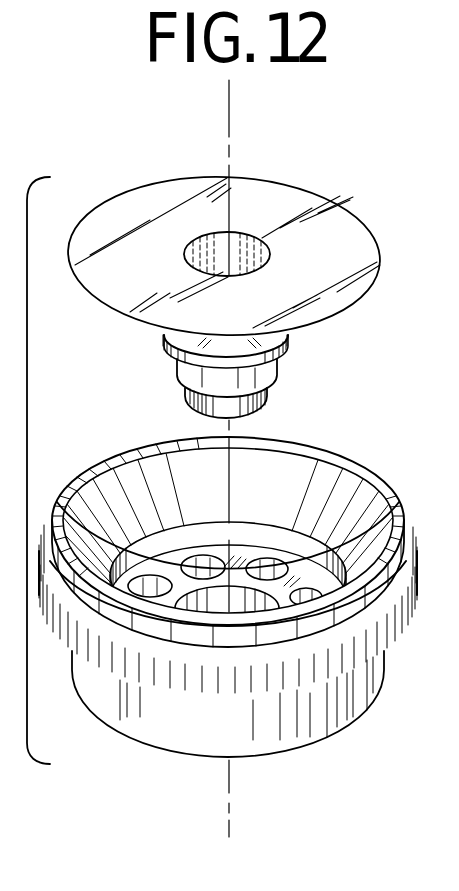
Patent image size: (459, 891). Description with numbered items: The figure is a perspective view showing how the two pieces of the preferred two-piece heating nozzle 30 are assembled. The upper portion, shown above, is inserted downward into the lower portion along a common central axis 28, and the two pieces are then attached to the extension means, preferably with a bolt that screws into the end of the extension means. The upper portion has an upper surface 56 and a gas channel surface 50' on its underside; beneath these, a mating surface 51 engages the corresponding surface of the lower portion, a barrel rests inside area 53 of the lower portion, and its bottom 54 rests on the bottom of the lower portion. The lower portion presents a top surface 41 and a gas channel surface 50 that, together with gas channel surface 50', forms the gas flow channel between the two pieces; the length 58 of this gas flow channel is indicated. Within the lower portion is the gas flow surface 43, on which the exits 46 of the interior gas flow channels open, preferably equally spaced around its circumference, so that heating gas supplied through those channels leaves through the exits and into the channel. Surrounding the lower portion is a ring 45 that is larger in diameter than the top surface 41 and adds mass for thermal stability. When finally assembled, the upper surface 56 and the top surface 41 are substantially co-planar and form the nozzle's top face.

The common central axis 28 is at (230, 200).
The two-piece nozzle 30 is at (380, 257).
The top surface 41 is at (74, 490).
The gas flow surface 43 is at (174, 563).
The ring 45 is at (405, 612).
The gas flow channel exits 46 is at (150, 580).
The gas channel surface 50 is at (250, 594).
The gas channel surface 50' is at (291, 343).
The mating surface 51 is at (188, 352).
The area 53 is at (188, 370).
The bottom 54 is at (270, 398).
The upper surface 56 is at (146, 207).
The length of the gas flow channel 58 is at (307, 485).